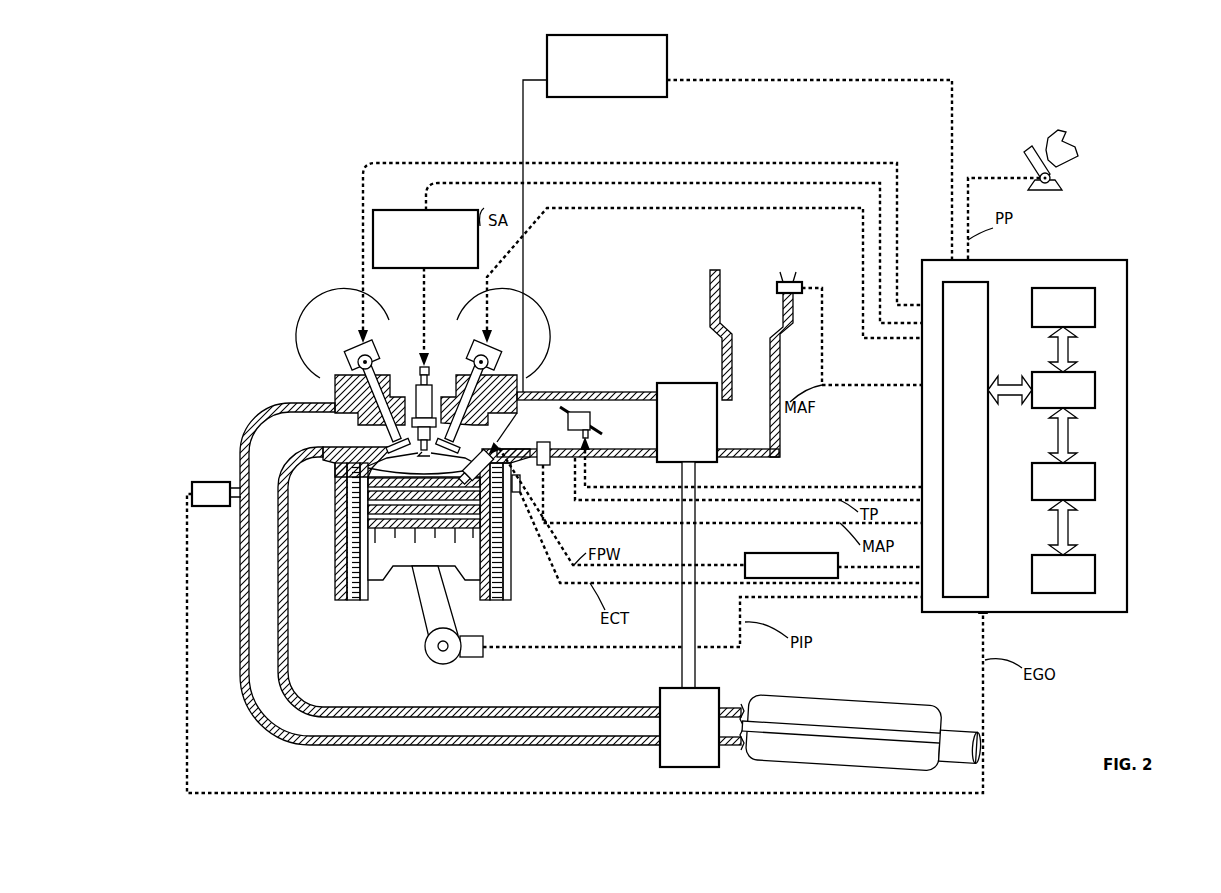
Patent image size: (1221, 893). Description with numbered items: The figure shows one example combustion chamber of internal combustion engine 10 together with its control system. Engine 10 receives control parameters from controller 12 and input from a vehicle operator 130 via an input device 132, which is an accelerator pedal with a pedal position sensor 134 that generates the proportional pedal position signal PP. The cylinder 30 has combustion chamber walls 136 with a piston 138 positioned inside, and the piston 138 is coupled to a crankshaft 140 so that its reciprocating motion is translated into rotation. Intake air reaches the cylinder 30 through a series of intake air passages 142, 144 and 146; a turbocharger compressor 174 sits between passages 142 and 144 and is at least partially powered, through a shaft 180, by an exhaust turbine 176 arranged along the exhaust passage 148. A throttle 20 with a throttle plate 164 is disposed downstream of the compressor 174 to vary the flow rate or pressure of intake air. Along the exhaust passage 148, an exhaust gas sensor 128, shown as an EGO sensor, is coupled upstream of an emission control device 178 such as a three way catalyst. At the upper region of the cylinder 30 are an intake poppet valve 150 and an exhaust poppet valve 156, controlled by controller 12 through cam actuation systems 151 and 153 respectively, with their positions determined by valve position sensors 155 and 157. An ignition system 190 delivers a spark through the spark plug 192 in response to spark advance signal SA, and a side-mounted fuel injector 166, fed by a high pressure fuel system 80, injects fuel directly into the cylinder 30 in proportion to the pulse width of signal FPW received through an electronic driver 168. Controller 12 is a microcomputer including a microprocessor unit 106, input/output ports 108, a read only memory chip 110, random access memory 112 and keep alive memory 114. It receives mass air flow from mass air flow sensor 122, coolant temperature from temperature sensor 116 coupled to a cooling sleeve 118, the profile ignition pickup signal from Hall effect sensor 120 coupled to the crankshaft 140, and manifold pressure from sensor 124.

The internal combustion engine 10 is at (180, 108).
The high pressure fuel system 80 is at (667, 50).
The ignition system 190 is at (383, 210).
The cam actuation system 153 is at (360, 345).
The cam actuation system 151 is at (478, 345).
The spark plug 192 is at (418, 380).
The intake poppet valve 150 is at (432, 400).
The valve position sensor 157 is at (350, 352).
The valve position sensor 155 is at (505, 372).
The exhaust poppet valve 156 is at (358, 405).
The throttle plate 164 is at (545, 440).
The throttle 20 is at (580, 410).
The exhaust passage 148 is at (324, 440).
The intake air passage 146 is at (553, 429).
The intake air passage 144 is at (638, 429).
The fuel injector 166 is at (601, 497).
The compressor 174 is at (677, 383).
The intake air passage 142 is at (767, 309).
The mass air flow sensor 122 is at (795, 282).
The input device 132 is at (1030, 160).
The vehicle operator 130 is at (1072, 148).
The pedal position sensor 134 is at (1058, 180).
The input/output ports 108 is at (990, 290).
The controller 12 is at (1125, 262).
The read only memory chip 110 is at (1097, 305).
The microprocessor unit 106 is at (1097, 390).
The random access memory 112 is at (1097, 482).
The keep alive memory 114 is at (1097, 575).
The exhaust gas sensor 128 is at (192, 486).
The cylinder 30 is at (340, 487).
The manifold pressure sensor 124 is at (545, 468).
The temperature sensor 116 is at (505, 558).
The cooling sleeve 118 is at (518, 495).
The combustion chamber walls 136 is at (358, 600).
The piston 138 is at (415, 560).
The crankshaft 140 is at (432, 660).
The Hall effect sensor 120 is at (475, 660).
The electronic driver 168 is at (748, 553).
The exhaust turbine 176 is at (660, 756).
The emission control device 178 is at (900, 705).
The shaft 180 is at (695, 660).